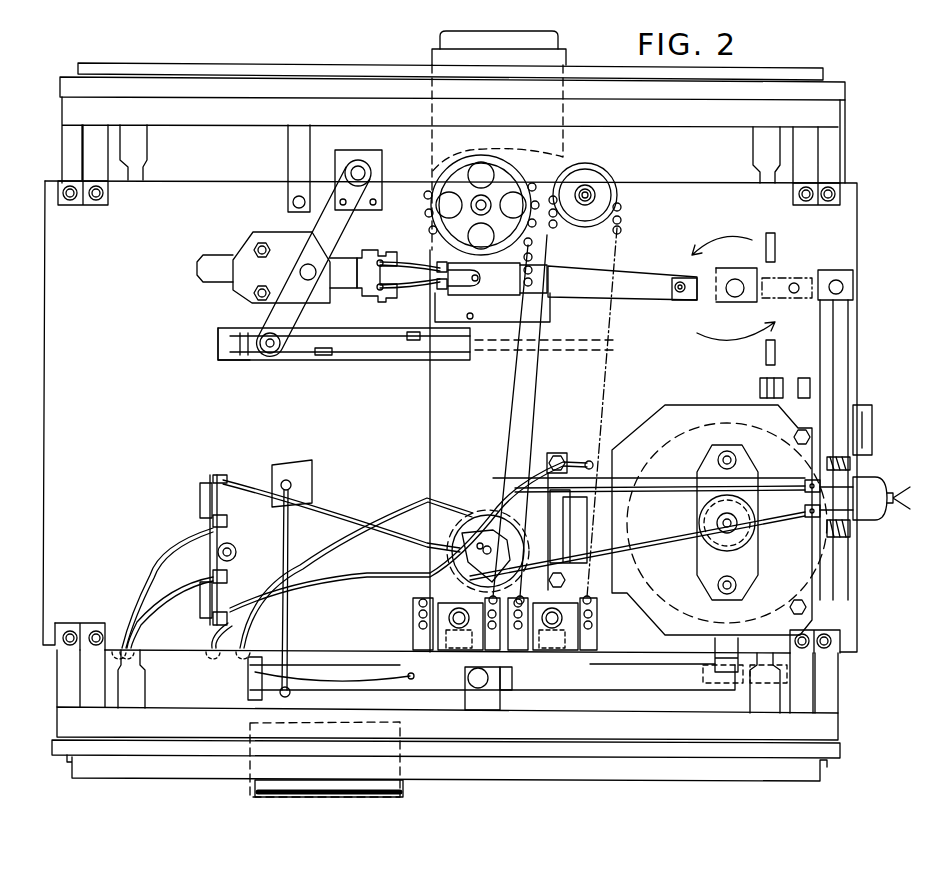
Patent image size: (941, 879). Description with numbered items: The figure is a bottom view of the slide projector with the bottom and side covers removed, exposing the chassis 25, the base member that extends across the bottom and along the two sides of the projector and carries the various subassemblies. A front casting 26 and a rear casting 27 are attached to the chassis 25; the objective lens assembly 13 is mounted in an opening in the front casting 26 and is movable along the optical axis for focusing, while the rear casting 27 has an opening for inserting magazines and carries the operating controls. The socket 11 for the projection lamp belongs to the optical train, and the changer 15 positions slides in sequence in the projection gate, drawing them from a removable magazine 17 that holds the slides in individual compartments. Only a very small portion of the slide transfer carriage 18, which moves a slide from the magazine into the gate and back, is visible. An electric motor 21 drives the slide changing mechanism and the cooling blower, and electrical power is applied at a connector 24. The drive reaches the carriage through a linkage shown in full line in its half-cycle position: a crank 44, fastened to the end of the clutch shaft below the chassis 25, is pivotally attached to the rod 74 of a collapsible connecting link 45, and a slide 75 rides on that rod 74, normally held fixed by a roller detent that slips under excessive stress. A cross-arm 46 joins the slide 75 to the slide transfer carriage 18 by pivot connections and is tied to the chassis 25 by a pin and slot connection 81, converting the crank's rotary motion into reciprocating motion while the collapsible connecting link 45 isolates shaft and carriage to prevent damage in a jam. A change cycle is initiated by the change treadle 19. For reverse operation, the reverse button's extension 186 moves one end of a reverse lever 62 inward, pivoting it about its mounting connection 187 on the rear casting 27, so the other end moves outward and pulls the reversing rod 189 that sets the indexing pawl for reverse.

The socket 11 is at (470, 528).
The objective lens assembly 13 is at (440, 34).
The changer 15 is at (246, 314).
The removable magazine 17 is at (252, 788).
The slide transfer carriage 18 is at (301, 354).
The change treadle 19 is at (787, 781).
The electric motor 21 is at (712, 440).
The connector 24 is at (840, 485).
The chassis 25 is at (45, 301).
The front casting 26 is at (60, 85).
The rear casting 27 is at (73, 722).
The crank 44 is at (690, 305).
The collapsible connecting link 45 is at (417, 253).
The cross-arm 46 is at (312, 226).
The reverse lever 62 is at (650, 680).
The rod 74 is at (641, 276).
The slide 75 is at (245, 257).
The pin and slot connection 81 is at (383, 155).
The extension 186 is at (718, 660).
The mounting connection 187 is at (466, 681).
The reversing rod 189 is at (290, 611).